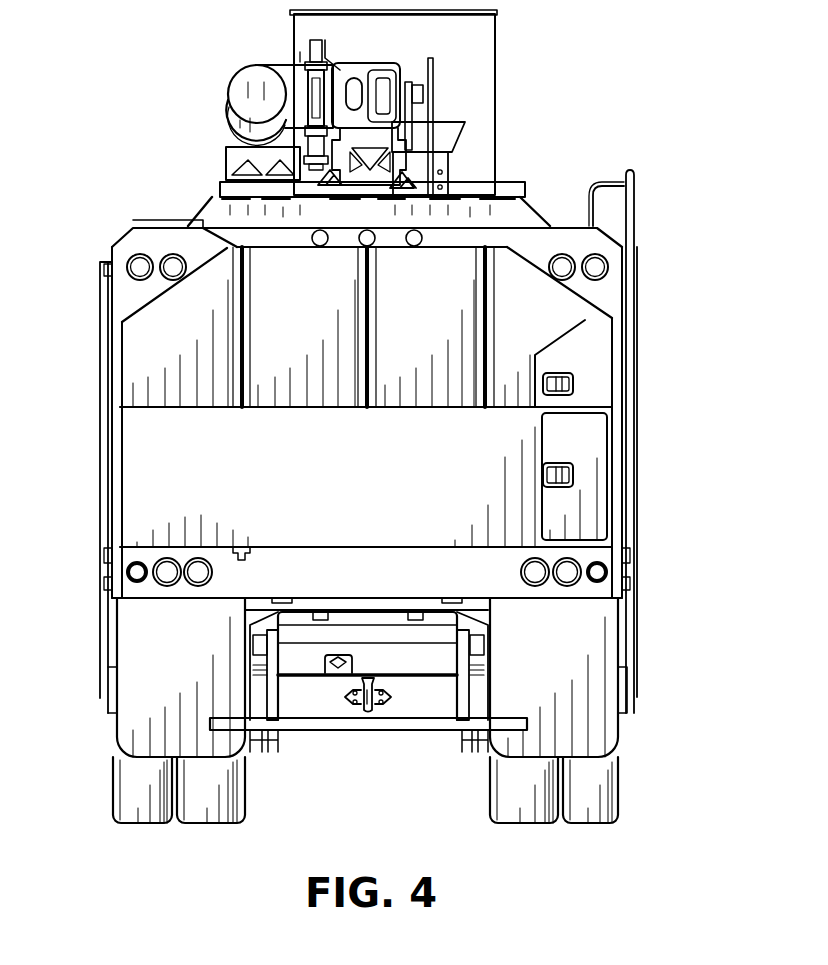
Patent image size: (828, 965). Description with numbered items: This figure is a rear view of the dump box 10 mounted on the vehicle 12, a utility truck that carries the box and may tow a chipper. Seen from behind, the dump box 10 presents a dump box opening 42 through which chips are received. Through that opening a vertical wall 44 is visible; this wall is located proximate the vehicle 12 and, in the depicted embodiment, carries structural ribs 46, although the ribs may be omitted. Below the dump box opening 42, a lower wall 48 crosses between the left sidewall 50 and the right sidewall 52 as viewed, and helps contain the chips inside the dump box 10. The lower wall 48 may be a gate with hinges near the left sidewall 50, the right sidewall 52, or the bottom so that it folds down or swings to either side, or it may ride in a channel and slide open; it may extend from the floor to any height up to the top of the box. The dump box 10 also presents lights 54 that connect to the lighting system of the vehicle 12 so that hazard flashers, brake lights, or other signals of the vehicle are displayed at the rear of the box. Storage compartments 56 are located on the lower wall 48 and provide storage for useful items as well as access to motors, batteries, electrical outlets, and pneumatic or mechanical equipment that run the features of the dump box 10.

The dump box 10 is at (549, 224).
The vehicle 12 is at (141, 103).
The dump box opening 42 is at (133, 345).
The vertical wall 44 is at (157, 308).
The structural ribs 46 is at (204, 225).
The lower wall 48 is at (133, 453).
The left sidewall 50 is at (80, 530).
The right sidewall 52 is at (662, 326).
The lights 54 is at (597, 268).
The storage compartments 56 is at (597, 392).